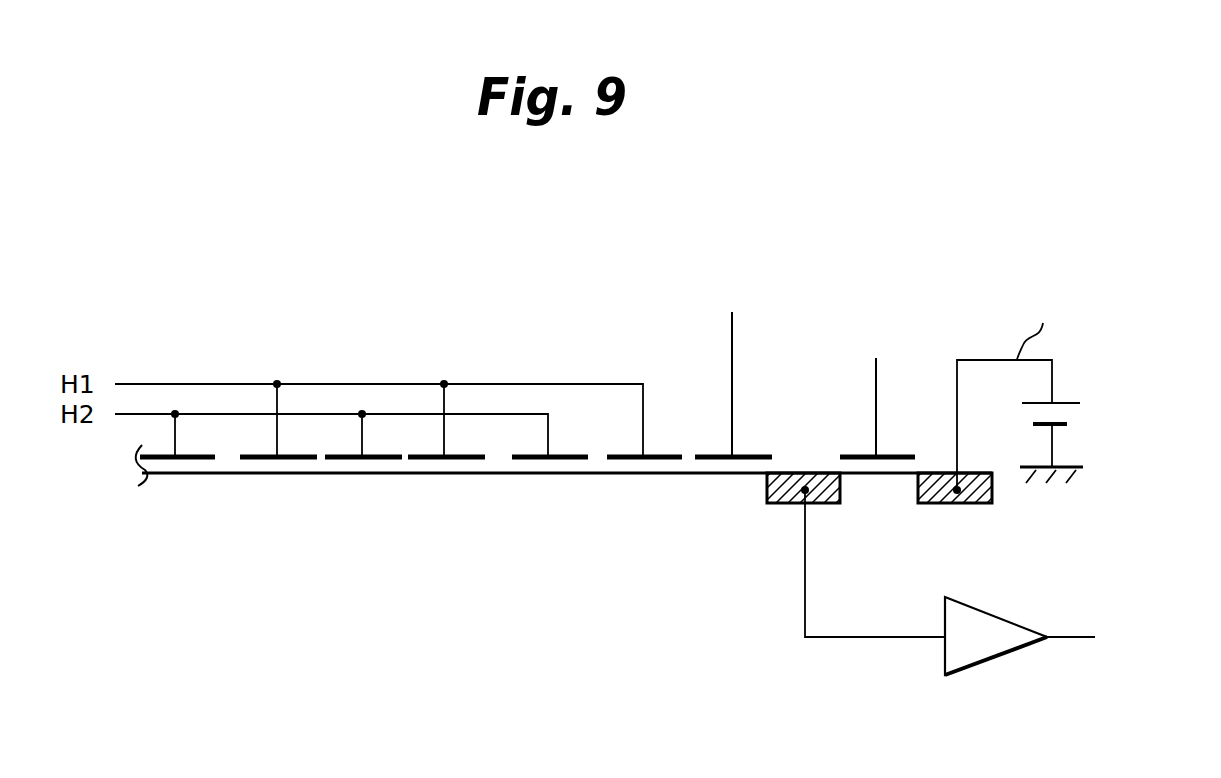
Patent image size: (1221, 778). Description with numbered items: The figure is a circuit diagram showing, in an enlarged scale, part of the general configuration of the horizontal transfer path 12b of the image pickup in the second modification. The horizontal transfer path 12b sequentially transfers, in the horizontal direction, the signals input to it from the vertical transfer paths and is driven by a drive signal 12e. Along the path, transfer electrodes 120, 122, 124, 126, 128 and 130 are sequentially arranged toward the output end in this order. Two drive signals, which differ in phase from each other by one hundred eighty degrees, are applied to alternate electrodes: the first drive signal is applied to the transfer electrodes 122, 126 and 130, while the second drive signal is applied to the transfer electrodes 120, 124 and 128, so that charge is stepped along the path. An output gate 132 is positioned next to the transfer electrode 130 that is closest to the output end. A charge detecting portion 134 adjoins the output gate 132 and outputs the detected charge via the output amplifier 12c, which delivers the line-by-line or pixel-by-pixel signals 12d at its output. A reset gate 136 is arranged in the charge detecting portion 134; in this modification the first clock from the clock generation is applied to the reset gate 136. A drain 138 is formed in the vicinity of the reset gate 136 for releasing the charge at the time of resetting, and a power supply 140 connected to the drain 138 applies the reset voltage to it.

The horizontal transfer path 12b is at (454, 606).
The output amplifier 12c is at (990, 660).
The signals 12d is at (1070, 637).
The drive signal 12e is at (876, 385).
The transfer electrode 120 is at (145, 455).
The transfer electrode 122 is at (300, 453).
The transfer electrode 124 is at (390, 453).
The transfer electrode 126 is at (467, 455).
The transfer electrode 128 is at (528, 455).
The transfer electrode 130 is at (617, 455).
The output gate 132 is at (713, 453).
The charge detecting portion 134 is at (780, 505).
The reset gate 136 is at (927, 453).
The drain 138 is at (992, 507).
The power supply 140 is at (1080, 430).